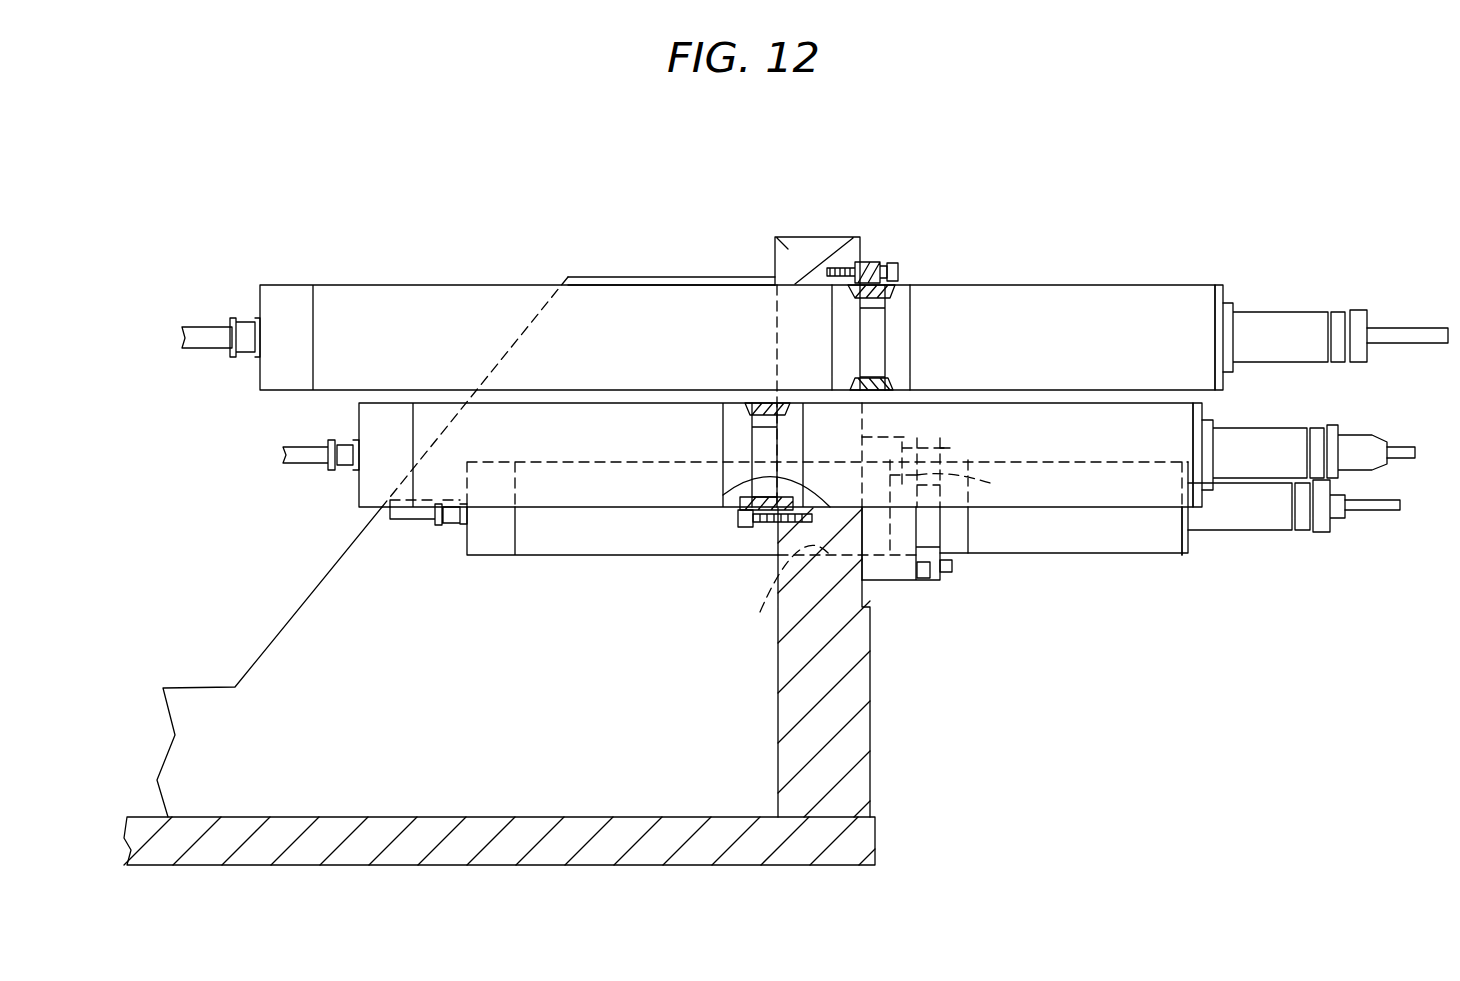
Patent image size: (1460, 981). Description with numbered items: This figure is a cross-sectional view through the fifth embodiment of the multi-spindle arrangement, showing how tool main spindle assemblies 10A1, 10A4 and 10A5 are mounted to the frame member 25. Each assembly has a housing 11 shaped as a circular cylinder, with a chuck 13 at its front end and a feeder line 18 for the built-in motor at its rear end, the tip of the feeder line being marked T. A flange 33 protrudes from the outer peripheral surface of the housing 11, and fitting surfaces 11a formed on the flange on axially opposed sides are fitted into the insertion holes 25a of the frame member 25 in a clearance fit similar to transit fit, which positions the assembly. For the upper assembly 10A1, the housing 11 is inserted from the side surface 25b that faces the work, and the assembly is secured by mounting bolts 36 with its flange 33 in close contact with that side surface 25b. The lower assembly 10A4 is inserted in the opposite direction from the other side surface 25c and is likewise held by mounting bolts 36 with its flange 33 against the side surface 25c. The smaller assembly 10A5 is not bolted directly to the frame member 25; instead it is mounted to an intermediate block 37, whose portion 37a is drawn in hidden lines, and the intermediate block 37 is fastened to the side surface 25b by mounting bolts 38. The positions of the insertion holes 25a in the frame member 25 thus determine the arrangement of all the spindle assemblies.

The tool main spindle assembly 10A1 is at (1141, 284).
The tool main spindle assembly 10A4 is at (1139, 400).
The tool main spindle assembly 10A5 is at (576, 557).
The housing 11 is at (1045, 298).
The fitting surface 11a is at (842, 352).
The chuck 13 is at (1288, 321).
The feeder line 18 is at (206, 344).
The frame member 25 is at (848, 745).
The insertion hole 25a is at (786, 288).
The side surface 25b is at (878, 226).
The other side surface 25c is at (775, 265).
The flange 33 is at (873, 268).
The mounting bolt 36 is at (900, 274).
The intermediate block 37 is at (884, 582).
The bracket portion 37a is at (986, 484).
The mounting bolt 38 is at (925, 580).
The tip T is at (1422, 332).